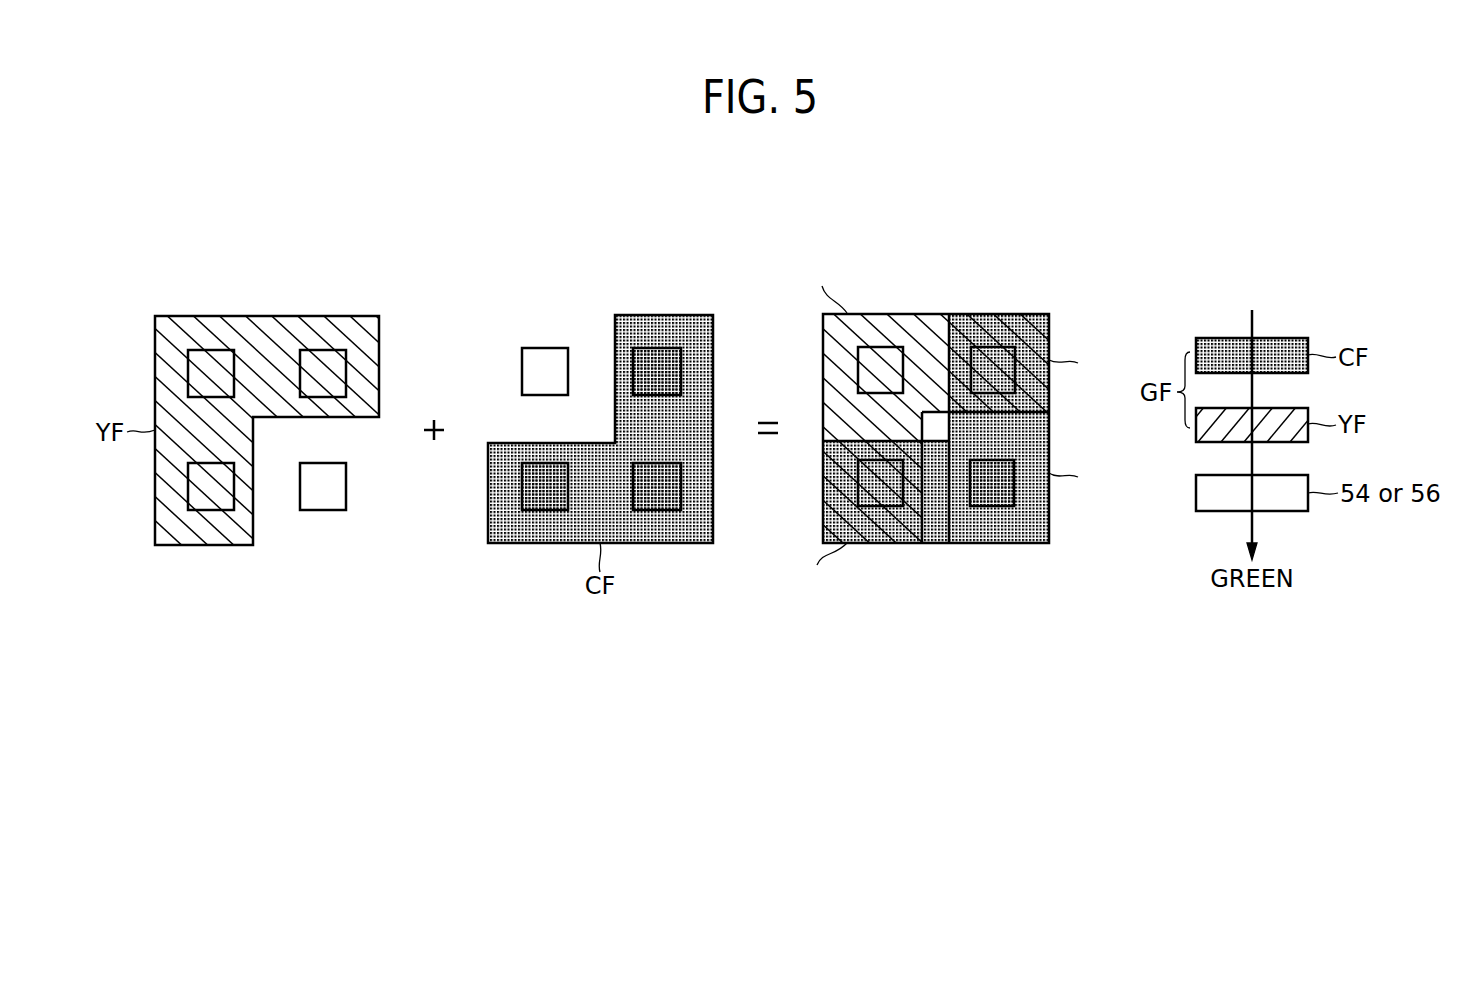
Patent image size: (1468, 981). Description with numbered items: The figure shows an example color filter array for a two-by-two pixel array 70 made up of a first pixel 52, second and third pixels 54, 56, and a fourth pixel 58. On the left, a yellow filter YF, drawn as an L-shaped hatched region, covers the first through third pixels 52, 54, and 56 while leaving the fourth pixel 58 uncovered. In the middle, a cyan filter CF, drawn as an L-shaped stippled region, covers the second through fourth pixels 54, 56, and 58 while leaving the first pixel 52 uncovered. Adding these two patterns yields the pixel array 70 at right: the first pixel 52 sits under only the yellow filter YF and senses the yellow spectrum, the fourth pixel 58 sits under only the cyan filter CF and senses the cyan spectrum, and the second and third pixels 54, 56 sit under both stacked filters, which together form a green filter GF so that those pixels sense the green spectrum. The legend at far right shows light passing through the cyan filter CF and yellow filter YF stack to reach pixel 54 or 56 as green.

The first pixel 52 is at (207, 350).
The second pixel 54 is at (320, 350).
The third pixel 56 is at (210, 512).
The fourth pixel 58 is at (322, 512).
The 2×2 pixel array 70 is at (1090, 238).